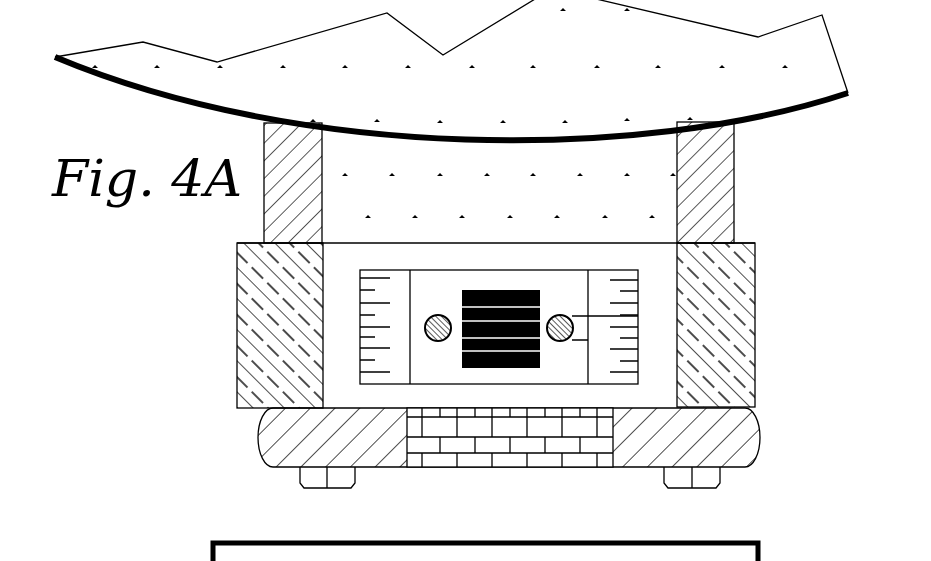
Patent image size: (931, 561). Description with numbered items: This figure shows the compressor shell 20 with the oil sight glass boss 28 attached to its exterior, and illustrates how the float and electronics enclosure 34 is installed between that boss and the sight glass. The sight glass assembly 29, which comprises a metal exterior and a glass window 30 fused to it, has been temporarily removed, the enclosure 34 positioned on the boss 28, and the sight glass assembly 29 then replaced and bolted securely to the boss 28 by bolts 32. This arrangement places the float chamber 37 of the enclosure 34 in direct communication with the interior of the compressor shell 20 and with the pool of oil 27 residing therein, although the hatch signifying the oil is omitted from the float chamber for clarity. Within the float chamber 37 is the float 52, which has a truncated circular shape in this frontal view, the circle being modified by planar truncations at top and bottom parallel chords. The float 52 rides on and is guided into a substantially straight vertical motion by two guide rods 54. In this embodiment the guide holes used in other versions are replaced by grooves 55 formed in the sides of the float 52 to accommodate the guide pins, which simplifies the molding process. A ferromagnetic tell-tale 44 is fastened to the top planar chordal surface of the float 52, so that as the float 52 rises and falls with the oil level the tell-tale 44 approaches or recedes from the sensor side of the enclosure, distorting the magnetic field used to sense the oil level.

The compressor shell 20 is at (147, 95).
The pool of oil 27 is at (451, 109).
The oil sight glass boss 28 is at (735, 160).
The sight glass assembly 29 is at (258, 438).
The glass window 30 is at (506, 468).
The bolts 32 is at (717, 480).
The float and electronics enclosure 34 is at (757, 322).
The float chamber 37 is at (343, 312).
The ferromagnetic tell-tale 44 is at (517, 290).
The float 52 is at (490, 270).
The guide rods 54 is at (437, 313).
The grooves 55 is at (600, 343).